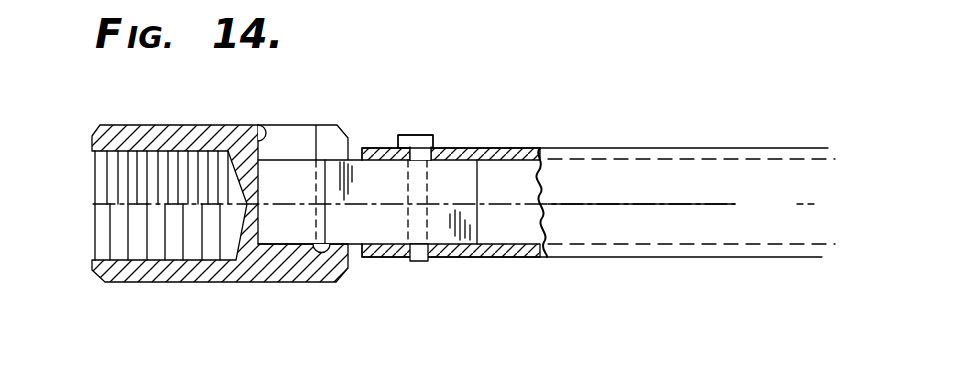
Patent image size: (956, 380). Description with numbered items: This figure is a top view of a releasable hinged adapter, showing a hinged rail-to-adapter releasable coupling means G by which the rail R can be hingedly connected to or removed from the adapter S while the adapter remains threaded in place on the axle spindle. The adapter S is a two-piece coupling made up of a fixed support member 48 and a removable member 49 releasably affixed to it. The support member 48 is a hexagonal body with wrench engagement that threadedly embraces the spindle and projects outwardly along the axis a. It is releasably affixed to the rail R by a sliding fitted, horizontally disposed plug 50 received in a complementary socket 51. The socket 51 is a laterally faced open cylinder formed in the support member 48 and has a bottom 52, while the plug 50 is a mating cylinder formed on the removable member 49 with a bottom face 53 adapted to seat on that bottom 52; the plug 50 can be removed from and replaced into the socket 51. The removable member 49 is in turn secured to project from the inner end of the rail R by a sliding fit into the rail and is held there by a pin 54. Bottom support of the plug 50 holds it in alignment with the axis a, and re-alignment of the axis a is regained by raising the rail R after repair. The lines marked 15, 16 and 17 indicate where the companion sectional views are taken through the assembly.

The section line 15— 15 is at (93, 204).
The section line 16— 16 is at (258, 73).
The section line 17— 17 is at (375, 73).
The adapter S is at (171, 285).
The support member 48 is at (268, 274).
The rail-to-adapter releasable coupling means G is at (288, 120).
The plug 50 is at (310, 168).
The socket 51 is at (272, 125).
The bottom 52 is at (302, 238).
The bottom face 53 is at (337, 241).
The rail R is at (697, 142).
The axis a is at (624, 204).
The pin 54 is at (426, 140).
The removable member 49 is at (397, 237).